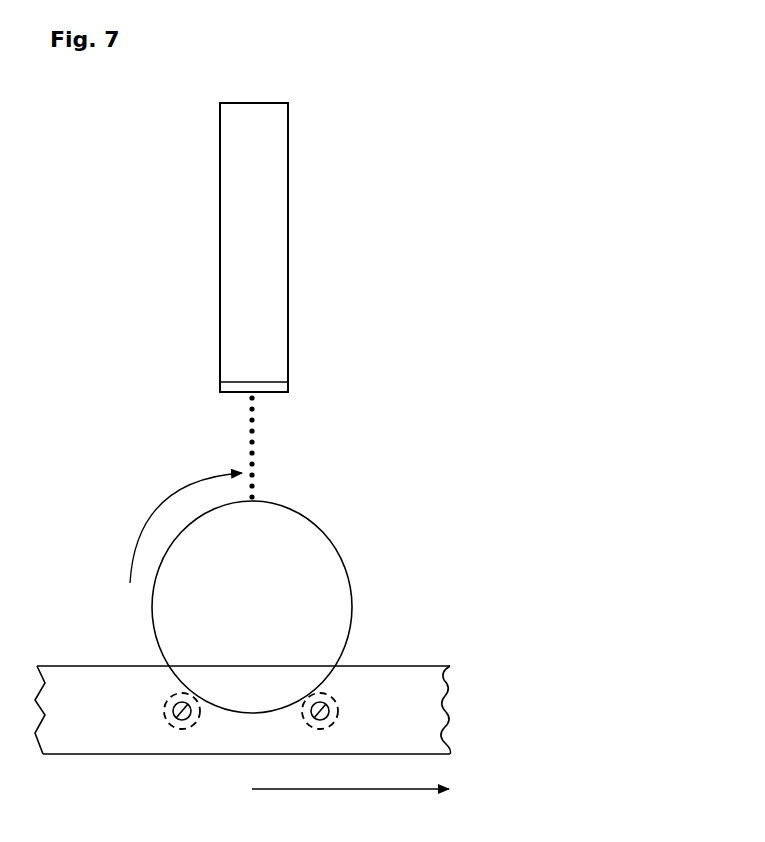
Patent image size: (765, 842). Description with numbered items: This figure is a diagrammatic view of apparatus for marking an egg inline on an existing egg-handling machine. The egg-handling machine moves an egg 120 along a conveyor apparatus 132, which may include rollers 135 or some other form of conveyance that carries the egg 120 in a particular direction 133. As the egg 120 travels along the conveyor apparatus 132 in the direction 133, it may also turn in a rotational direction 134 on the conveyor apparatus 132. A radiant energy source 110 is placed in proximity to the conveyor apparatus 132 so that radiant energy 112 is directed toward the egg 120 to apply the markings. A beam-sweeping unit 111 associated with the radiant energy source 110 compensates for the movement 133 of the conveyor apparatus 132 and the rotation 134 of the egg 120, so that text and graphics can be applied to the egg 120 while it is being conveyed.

The radiant energy source 110 is at (293, 351).
The beam-sweeping unit 111 is at (293, 388).
The radiant energy 112 is at (247, 437).
The egg 120 is at (341, 541).
The conveyor apparatus 132 is at (461, 718).
The direction 133 is at (338, 790).
The rotational direction 134 is at (180, 539).
The rollers 135 is at (166, 696).